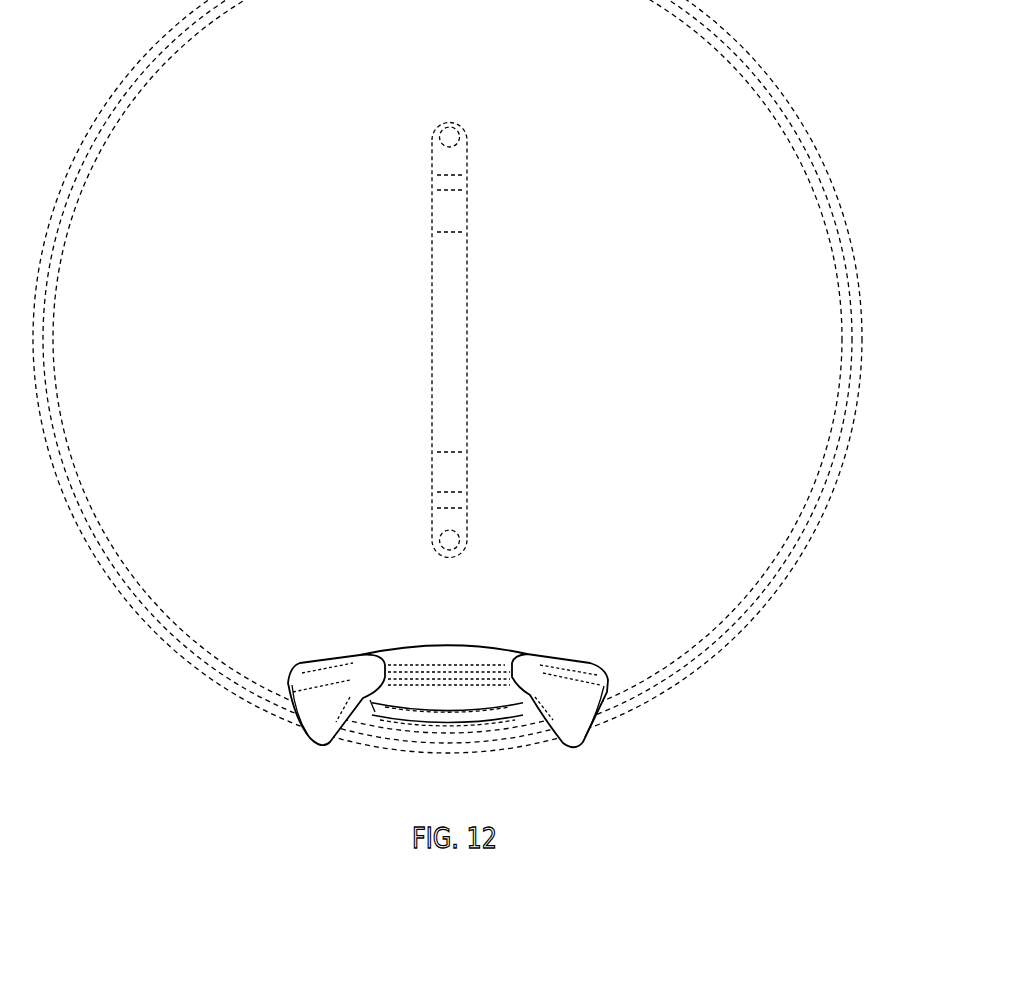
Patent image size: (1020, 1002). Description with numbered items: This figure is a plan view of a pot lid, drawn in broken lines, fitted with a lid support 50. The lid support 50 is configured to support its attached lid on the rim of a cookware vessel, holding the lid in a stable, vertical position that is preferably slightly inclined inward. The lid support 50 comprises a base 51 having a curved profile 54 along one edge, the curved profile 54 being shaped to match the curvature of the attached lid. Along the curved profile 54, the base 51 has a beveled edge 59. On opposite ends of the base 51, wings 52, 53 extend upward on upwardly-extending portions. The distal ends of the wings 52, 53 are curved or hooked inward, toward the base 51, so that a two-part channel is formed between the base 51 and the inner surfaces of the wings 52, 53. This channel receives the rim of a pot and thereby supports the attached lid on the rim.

The lid support 50 is at (288, 684).
The base 51 is at (470, 698).
The wing 52 is at (322, 708).
The wing 53 is at (578, 713).
The curved profile 54 is at (388, 718).
The beveled edge 59 is at (372, 702).